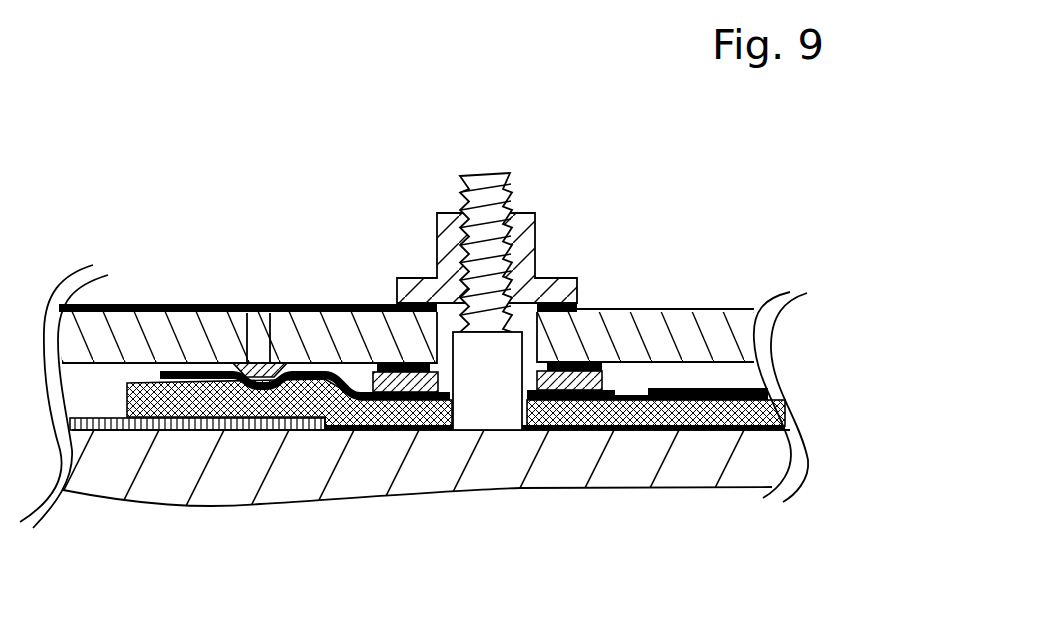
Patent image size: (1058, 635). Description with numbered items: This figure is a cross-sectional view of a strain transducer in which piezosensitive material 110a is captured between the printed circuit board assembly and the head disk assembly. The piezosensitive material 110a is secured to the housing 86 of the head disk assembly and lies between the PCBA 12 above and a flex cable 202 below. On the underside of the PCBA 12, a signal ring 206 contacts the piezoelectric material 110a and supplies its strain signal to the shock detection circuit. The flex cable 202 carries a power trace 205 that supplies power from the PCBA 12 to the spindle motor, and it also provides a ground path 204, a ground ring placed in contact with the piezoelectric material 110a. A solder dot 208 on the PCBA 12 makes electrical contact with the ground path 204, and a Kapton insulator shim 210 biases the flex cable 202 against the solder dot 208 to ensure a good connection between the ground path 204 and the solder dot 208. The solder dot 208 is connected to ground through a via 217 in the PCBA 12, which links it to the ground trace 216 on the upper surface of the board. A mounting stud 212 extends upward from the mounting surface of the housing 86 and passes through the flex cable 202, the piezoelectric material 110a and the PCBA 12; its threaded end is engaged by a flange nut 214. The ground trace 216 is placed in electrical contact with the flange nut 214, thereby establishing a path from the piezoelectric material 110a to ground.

The PCBA 12 is at (677, 335).
The housing 86 is at (700, 430).
The piezosensitive material 110a is at (552, 382).
The flex cable 202 is at (620, 405).
The ground path 204 is at (167, 373).
The power trace 205 is at (733, 387).
The signal ring 206 is at (560, 362).
The solder dot 208 is at (243, 358).
The Kapton insulator shim 210 is at (118, 422).
The mounting stud 212 is at (487, 173).
The flange nut 214 is at (537, 245).
The ground trace 216 is at (376, 304).
The via 217 is at (267, 347).